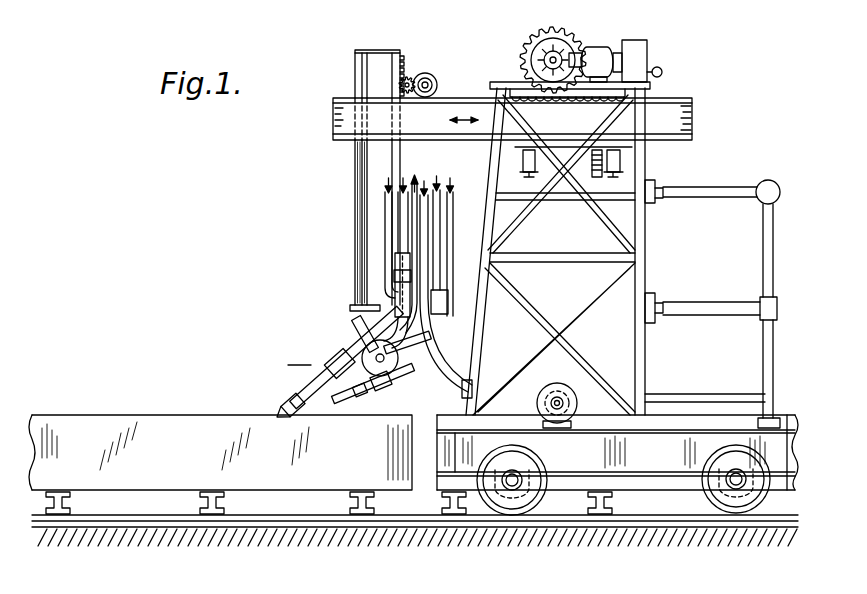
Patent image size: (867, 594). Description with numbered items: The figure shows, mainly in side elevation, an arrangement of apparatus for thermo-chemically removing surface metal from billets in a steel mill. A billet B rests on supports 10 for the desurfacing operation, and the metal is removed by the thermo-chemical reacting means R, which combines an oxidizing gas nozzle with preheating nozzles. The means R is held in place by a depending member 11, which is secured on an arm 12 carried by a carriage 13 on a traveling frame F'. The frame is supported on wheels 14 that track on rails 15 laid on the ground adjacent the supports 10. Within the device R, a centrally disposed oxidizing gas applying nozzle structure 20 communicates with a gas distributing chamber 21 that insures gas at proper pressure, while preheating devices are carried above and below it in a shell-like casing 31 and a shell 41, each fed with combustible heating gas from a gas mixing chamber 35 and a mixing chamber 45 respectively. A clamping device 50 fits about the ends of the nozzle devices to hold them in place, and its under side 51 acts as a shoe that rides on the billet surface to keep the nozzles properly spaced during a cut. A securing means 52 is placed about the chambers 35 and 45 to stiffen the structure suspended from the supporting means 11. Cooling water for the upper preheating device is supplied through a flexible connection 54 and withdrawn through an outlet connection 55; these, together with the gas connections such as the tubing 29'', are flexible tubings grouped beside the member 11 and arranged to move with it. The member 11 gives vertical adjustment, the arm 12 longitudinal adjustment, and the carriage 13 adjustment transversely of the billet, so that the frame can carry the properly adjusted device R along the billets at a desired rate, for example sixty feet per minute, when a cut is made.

The arm 12 is at (333, 120).
The depending member 11 is at (360, 268).
The carriage 13 is at (625, 147).
The flexible connection 54 is at (385, 210).
The outlet connection 55 is at (412, 240).
The pipe 29'' is at (444, 254).
The gas mixing chamber 35 is at (402, 278).
The securing means 52 is at (449, 311).
The mixing chamber 45 is at (428, 368).
The oxidizing gas applying nozzle structure 20 is at (355, 343).
The gas distributing chamber 21 is at (383, 368).
The shell-like casing 31 is at (320, 377).
The shell 41 is at (336, 401).
The clamping device 50 is at (283, 398).
The under side shoe 51 is at (303, 418).
The wheels 14 is at (497, 503).
The supports 10 is at (207, 502).
The rails 15 is at (101, 509).
The thermo-chemical reacting means R is at (299, 353).
The billet B is at (160, 412).
The frame F' is at (615, 248).